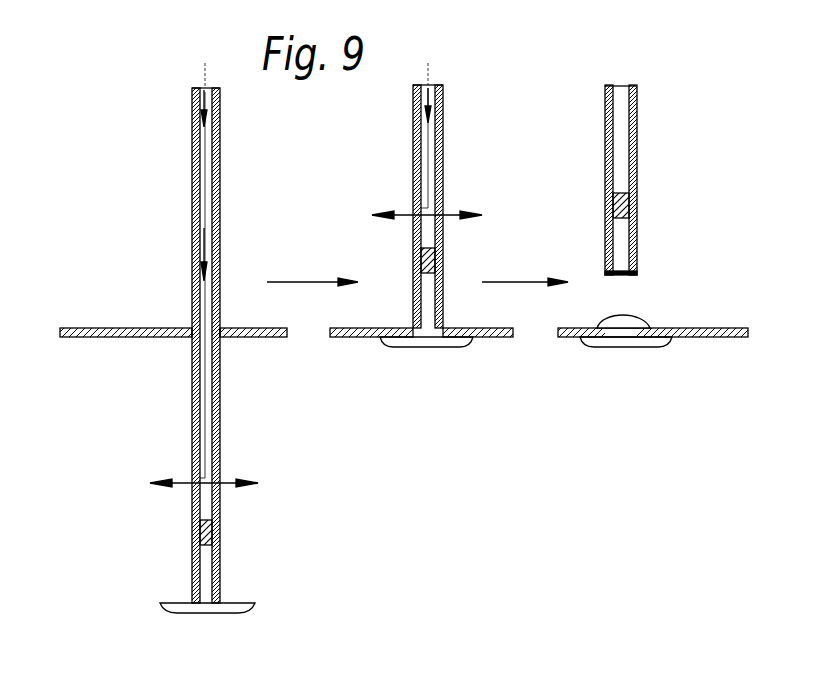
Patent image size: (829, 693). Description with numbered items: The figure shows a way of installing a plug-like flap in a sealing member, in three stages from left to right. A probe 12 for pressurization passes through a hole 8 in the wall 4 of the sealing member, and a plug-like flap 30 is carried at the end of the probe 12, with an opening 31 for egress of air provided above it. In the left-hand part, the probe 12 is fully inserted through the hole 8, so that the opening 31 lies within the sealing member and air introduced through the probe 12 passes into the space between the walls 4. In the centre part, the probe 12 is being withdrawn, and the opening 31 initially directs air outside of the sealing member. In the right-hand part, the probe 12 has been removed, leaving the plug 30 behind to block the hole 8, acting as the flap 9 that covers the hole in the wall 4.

The walls 4 is at (108, 328).
The hole 8 is at (191, 328).
The flap 9 is at (650, 347).
The probe 12 is at (219, 137).
The plug-like flap 30 is at (172, 603).
The opening 31 is at (194, 476).